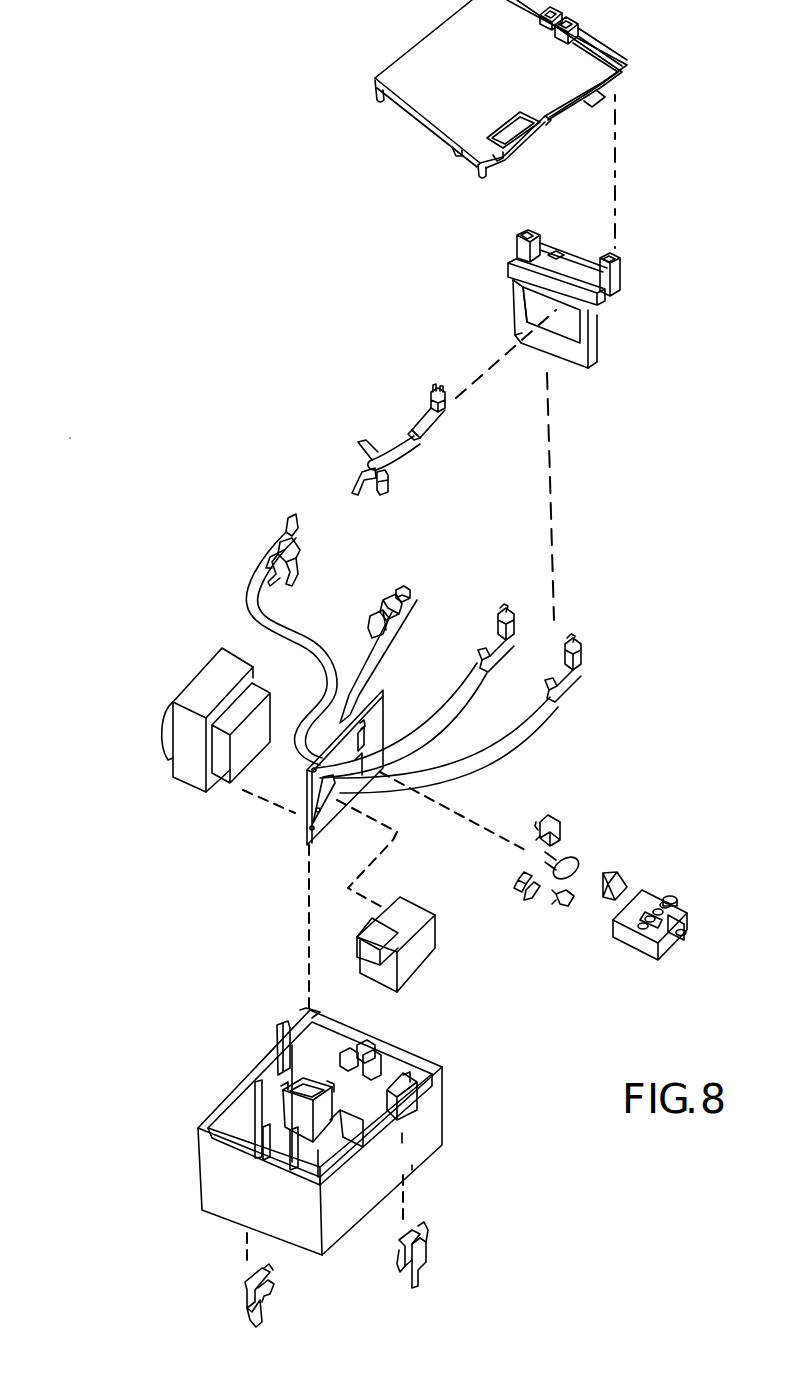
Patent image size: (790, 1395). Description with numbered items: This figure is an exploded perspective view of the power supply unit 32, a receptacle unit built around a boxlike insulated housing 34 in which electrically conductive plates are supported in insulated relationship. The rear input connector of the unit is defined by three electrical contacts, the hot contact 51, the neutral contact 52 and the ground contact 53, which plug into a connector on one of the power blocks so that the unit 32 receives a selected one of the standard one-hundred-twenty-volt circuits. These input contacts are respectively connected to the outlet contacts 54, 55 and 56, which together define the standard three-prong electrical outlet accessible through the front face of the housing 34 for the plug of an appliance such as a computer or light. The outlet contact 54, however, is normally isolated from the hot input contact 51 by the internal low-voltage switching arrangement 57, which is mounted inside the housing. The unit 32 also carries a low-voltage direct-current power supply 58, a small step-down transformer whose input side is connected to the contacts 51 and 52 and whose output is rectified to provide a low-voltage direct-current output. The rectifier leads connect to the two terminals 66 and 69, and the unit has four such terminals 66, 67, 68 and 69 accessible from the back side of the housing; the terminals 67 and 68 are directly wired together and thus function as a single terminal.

The power supply unit 32 is at (122, 452).
The housing 34 is at (218, 1173).
The hot contact 51 is at (505, 612).
The neutral contact 52 is at (582, 650).
The ground contact 53 is at (430, 385).
The outlet contact 54 is at (306, 562).
The outlet contact 55 is at (380, 600).
The outlet contact 56 is at (388, 480).
The low-voltage switching arrangement 57 is at (417, 953).
The low-voltage direct-current power supply 58 is at (205, 683).
The terminal 66 is at (650, 933).
The terminal 67 is at (677, 930).
The terminal 68 is at (667, 910).
The terminal 69 is at (665, 898).